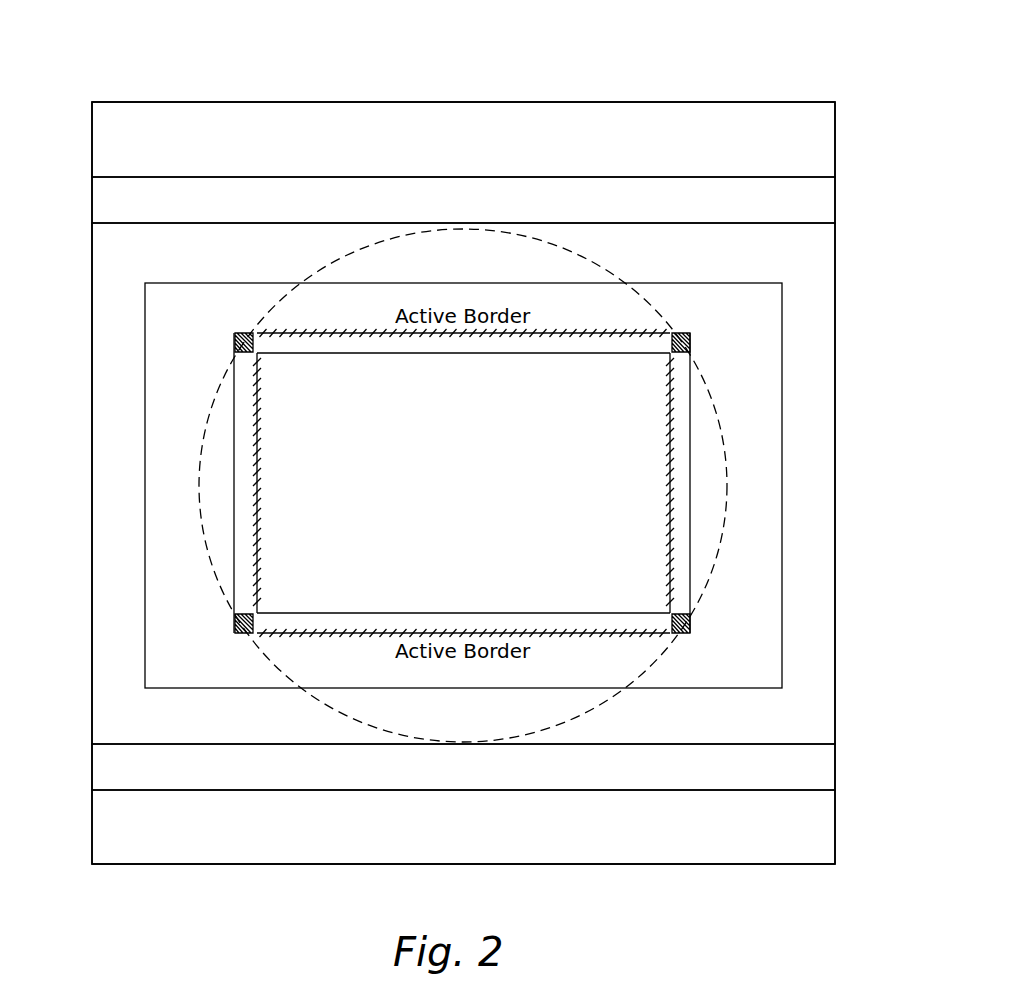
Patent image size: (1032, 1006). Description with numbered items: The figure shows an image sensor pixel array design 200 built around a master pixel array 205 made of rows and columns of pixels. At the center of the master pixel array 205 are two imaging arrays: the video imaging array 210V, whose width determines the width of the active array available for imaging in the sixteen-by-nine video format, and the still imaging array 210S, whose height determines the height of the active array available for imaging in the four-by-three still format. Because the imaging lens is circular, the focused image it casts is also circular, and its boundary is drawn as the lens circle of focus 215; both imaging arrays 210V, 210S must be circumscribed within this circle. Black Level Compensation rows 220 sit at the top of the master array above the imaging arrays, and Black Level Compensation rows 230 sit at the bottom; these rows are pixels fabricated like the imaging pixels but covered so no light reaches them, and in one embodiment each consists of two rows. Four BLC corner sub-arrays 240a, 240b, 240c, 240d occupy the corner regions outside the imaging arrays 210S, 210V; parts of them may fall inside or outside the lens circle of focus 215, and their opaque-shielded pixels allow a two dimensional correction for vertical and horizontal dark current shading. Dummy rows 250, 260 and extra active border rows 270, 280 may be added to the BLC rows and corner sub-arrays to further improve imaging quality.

The image sensor pixel array design 200 is at (130, 72).
The master pixel array 205 is at (530, 101).
The Black Level Compensation rows 220 is at (463, 139).
The dummy rows 250 is at (463, 200).
The extra active border rows 270 is at (463, 483).
The extra active border rows 280 is at (552, 712).
The dummy rows 260 is at (463, 767).
The Black Level Compensation rows 230 is at (463, 827).
The lens circle of focus 215 is at (727, 457).
The video imaging array 210V is at (234, 437).
The still imaging array 210S is at (670, 524).
The BLC corner sub-array 240a is at (235, 350).
The BLC corner sub-array 240b is at (692, 343).
The BLC corner sub-array 240c is at (235, 623).
The BLC corner sub-array 240d is at (692, 623).